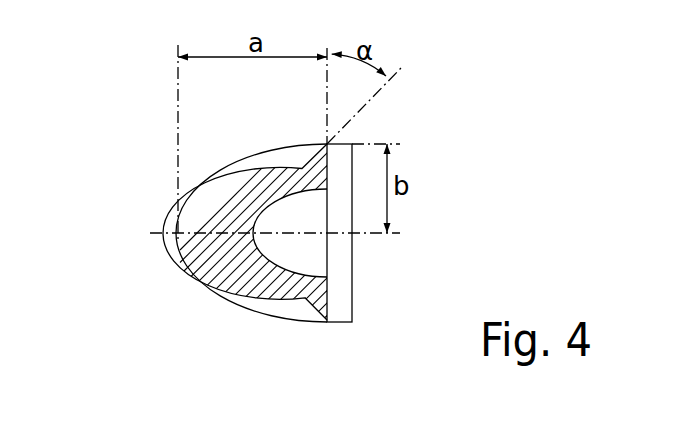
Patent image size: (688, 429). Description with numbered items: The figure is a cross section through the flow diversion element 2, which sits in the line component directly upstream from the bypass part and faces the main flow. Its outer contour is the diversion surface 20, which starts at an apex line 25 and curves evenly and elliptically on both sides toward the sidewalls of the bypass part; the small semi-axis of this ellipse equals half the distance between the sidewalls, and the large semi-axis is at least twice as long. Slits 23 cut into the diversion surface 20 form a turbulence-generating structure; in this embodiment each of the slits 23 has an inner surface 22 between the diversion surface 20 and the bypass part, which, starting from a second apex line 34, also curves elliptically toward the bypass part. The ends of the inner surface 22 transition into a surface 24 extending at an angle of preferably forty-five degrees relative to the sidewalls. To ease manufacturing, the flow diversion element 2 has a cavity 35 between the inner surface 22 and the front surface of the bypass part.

The flow diversion element 2 is at (157, 175).
The diversion surface 20 is at (205, 288).
The inner surface 22 is at (243, 283).
The slits 23 is at (275, 303).
The surface 24 is at (307, 323).
The apex line 25 is at (176, 230).
The second apex line 34 is at (211, 235).
The cavity 35 is at (308, 252).